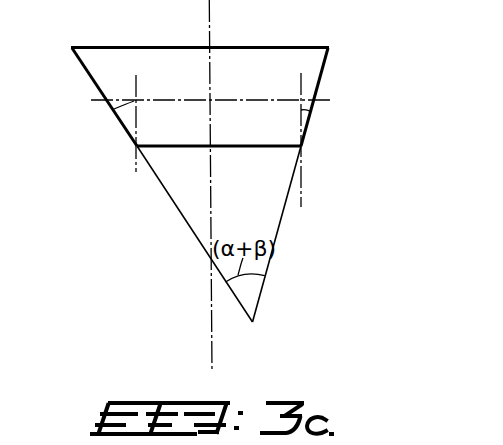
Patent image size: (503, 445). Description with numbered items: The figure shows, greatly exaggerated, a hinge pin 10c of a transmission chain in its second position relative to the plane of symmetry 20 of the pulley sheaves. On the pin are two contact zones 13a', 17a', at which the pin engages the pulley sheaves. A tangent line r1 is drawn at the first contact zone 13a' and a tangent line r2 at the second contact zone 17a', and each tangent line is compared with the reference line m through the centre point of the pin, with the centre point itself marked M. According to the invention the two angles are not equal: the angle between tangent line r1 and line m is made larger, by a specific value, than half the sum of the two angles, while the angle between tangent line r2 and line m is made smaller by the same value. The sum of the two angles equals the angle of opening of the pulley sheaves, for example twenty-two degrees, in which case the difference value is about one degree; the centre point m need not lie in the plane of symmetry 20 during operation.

The hinge pin 10c is at (297, 60).
The contact zone 13a' is at (83, 97).
The contact zone 17a' is at (350, 97).
The plane of symmetry 20 is at (212, 345).
The center point M is at (211, 88).
The line m is at (329, 173).
The tangent line r1 is at (164, 189).
The tangent line r2 is at (285, 212).